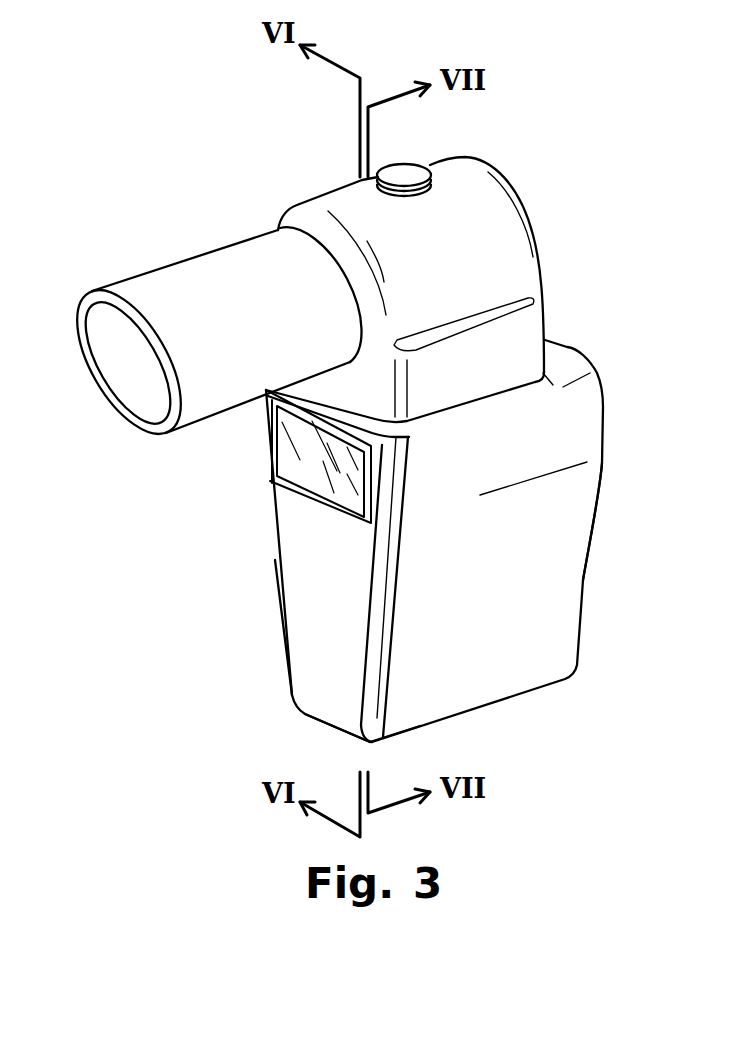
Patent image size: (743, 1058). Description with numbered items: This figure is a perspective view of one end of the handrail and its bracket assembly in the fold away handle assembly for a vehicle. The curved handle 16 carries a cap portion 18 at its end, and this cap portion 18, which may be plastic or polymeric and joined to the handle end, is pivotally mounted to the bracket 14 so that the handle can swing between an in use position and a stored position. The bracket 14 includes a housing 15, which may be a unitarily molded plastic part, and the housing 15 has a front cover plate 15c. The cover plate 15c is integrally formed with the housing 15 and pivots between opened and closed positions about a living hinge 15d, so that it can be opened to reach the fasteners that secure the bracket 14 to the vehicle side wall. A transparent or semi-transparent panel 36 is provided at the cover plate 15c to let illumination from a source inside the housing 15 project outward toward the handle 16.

The bracket 14 is at (547, 513).
The housing 15 is at (547, 607).
The cover plate 15c is at (305, 637).
The living hinge 15d is at (373, 742).
The handle 16 is at (235, 250).
The cap portion 18 is at (477, 250).
The transparent panel 36 is at (313, 467).